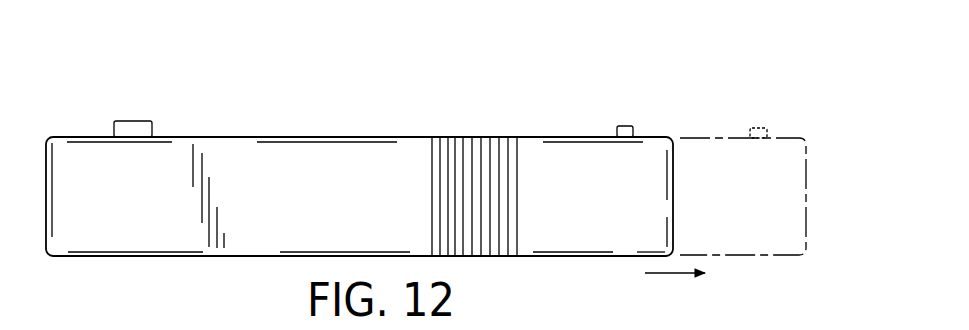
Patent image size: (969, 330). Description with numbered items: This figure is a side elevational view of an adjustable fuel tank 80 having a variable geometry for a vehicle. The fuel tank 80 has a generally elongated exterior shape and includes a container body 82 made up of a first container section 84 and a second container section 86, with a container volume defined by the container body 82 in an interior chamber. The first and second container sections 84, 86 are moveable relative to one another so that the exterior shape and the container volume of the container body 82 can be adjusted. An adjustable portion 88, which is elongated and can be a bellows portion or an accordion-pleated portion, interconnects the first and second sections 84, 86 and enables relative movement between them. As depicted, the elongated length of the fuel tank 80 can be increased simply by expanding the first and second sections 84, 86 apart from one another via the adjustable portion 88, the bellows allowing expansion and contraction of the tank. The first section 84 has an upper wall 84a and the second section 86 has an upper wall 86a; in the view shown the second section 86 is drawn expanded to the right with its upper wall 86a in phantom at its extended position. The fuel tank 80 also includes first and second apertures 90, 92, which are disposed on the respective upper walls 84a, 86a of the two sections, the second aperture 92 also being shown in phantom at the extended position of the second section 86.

The adjustable fuel tank 80 is at (277, 99).
The container body 82 is at (192, 250).
The first container section 84 is at (118, 220).
The upper wall of the first section 84a is at (313, 136).
The second container section 86 is at (583, 222).
The upper wall of the second section 86a is at (580, 137).
The adjustable portion 88 is at (475, 148).
The first aperture 90 is at (128, 131).
The second aperture 92 is at (623, 127).